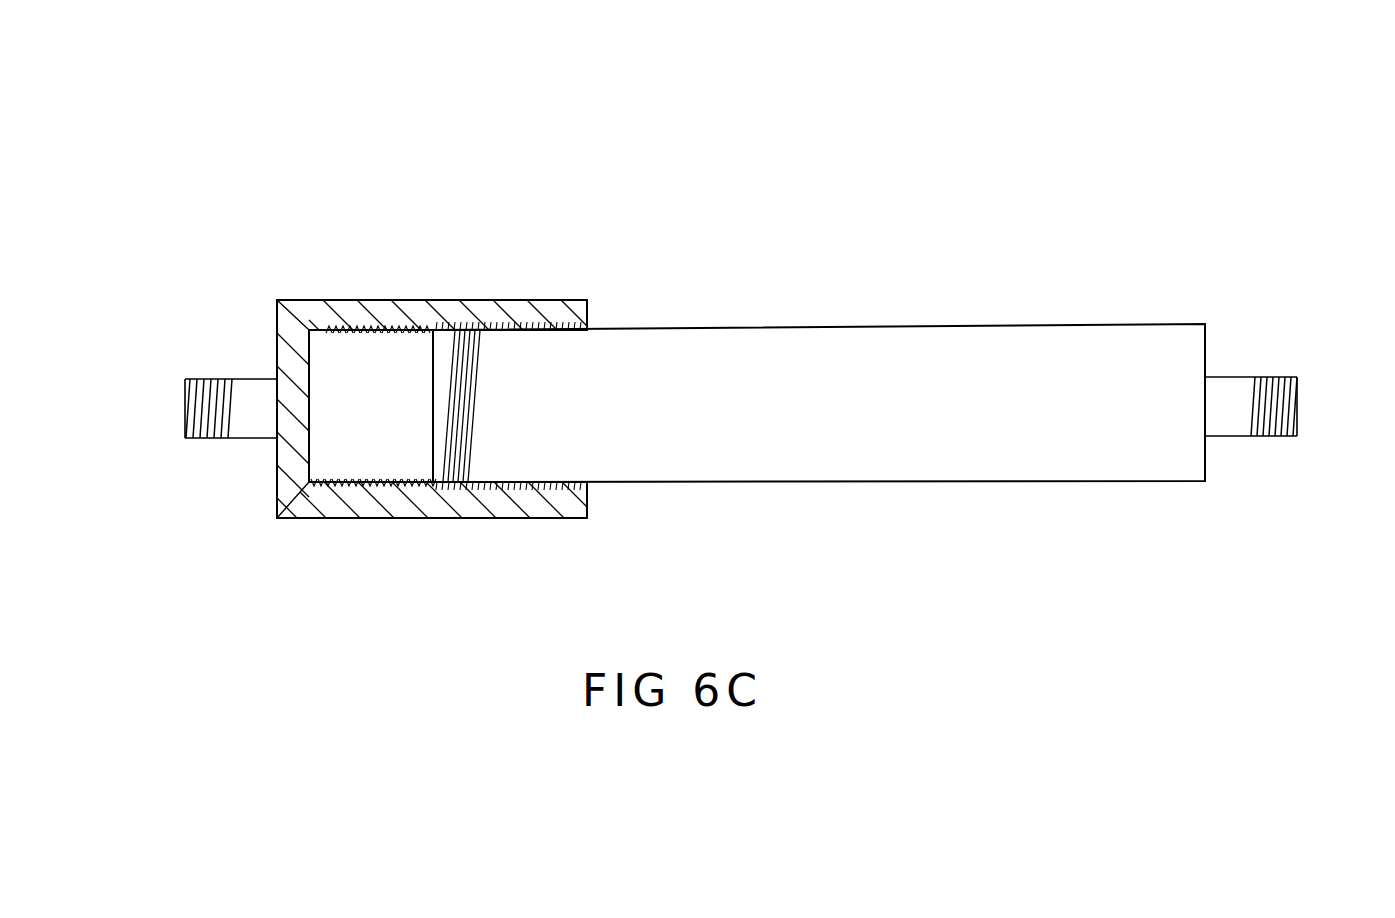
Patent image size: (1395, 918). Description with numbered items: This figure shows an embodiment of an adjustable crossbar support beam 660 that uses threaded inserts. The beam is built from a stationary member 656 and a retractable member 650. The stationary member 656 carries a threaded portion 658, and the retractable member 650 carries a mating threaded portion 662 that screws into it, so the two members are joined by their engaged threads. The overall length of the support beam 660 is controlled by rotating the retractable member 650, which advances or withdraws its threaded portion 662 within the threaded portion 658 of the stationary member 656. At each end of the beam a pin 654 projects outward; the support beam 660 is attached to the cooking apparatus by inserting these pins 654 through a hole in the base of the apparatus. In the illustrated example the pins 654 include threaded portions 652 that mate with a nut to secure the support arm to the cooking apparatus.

The retractable member 650 is at (773, 325).
The threaded portions 652 is at (200, 378).
The pins 654 is at (245, 443).
The stationary member 656 is at (490, 300).
The threaded portion 658 is at (376, 330).
The adjustable crossbar support beam 660 is at (715, 180).
The threaded portion 662 is at (478, 397).